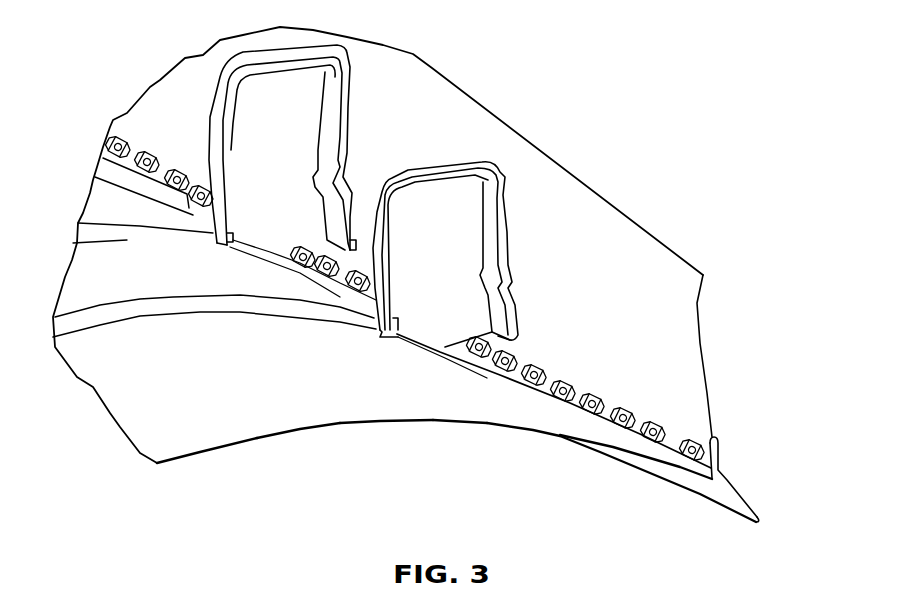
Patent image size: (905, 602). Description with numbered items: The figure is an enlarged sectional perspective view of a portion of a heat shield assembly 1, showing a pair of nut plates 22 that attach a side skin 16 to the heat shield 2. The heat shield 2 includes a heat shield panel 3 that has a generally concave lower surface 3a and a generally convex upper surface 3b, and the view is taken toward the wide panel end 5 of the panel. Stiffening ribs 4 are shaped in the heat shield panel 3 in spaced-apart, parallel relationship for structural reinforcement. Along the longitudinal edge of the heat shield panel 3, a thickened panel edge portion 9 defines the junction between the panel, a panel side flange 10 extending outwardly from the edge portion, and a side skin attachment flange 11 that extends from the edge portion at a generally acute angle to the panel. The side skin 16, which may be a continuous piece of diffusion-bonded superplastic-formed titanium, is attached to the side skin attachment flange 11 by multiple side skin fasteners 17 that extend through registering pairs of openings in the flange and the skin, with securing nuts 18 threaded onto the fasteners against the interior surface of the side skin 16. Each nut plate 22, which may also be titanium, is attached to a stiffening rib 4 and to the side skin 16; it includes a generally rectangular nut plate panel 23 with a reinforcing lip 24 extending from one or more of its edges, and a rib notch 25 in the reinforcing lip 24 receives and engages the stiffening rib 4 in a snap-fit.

The heat shield assembly 1 is at (601, 157).
The heat shield 2 is at (197, 470).
The heat shield panel 3 is at (368, 431).
The concave lower surface 3a is at (465, 424).
The convex upper surface 3b is at (547, 424).
The stiffening rib 4 is at (140, 233).
The wide panel end 5 is at (260, 440).
The thickened panel edge portion 9 is at (729, 511).
The panel side flange 10 is at (760, 507).
The side skin attachment flange 11 is at (720, 453).
The side skin 16 is at (682, 362).
The side skin fastener 17 is at (403, 321).
The securing nut 18 is at (613, 422).
The nut plate 22 is at (404, 191).
The nut plate panel 23 is at (453, 237).
The reinforcing lip 24 is at (382, 203).
The rib notch 25 is at (237, 243).